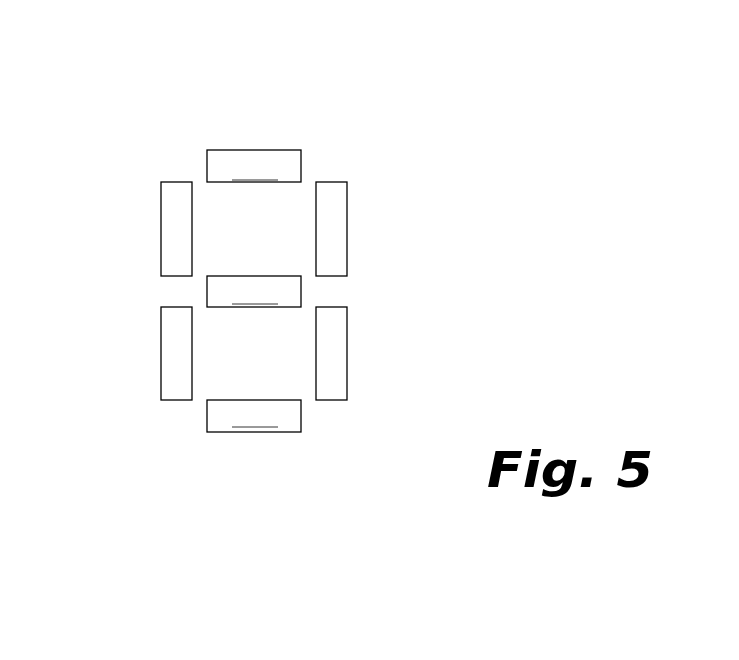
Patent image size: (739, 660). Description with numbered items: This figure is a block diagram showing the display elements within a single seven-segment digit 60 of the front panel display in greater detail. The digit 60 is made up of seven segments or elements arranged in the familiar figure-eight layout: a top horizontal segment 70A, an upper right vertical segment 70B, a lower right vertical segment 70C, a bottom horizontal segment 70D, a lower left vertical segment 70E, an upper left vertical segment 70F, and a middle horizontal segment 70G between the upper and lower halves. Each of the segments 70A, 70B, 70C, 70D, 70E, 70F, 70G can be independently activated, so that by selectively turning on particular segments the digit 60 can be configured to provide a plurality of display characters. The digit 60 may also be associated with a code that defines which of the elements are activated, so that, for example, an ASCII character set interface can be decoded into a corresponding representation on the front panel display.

The seven-segment digit 60 is at (256, 240).
The segment 70A is at (254, 166).
The segment 70B is at (333, 240).
The segment 70C is at (333, 368).
The segment 70D is at (254, 416).
The segment 70E is at (178, 368).
The segment 70F is at (178, 240).
The segment 70G is at (254, 291).